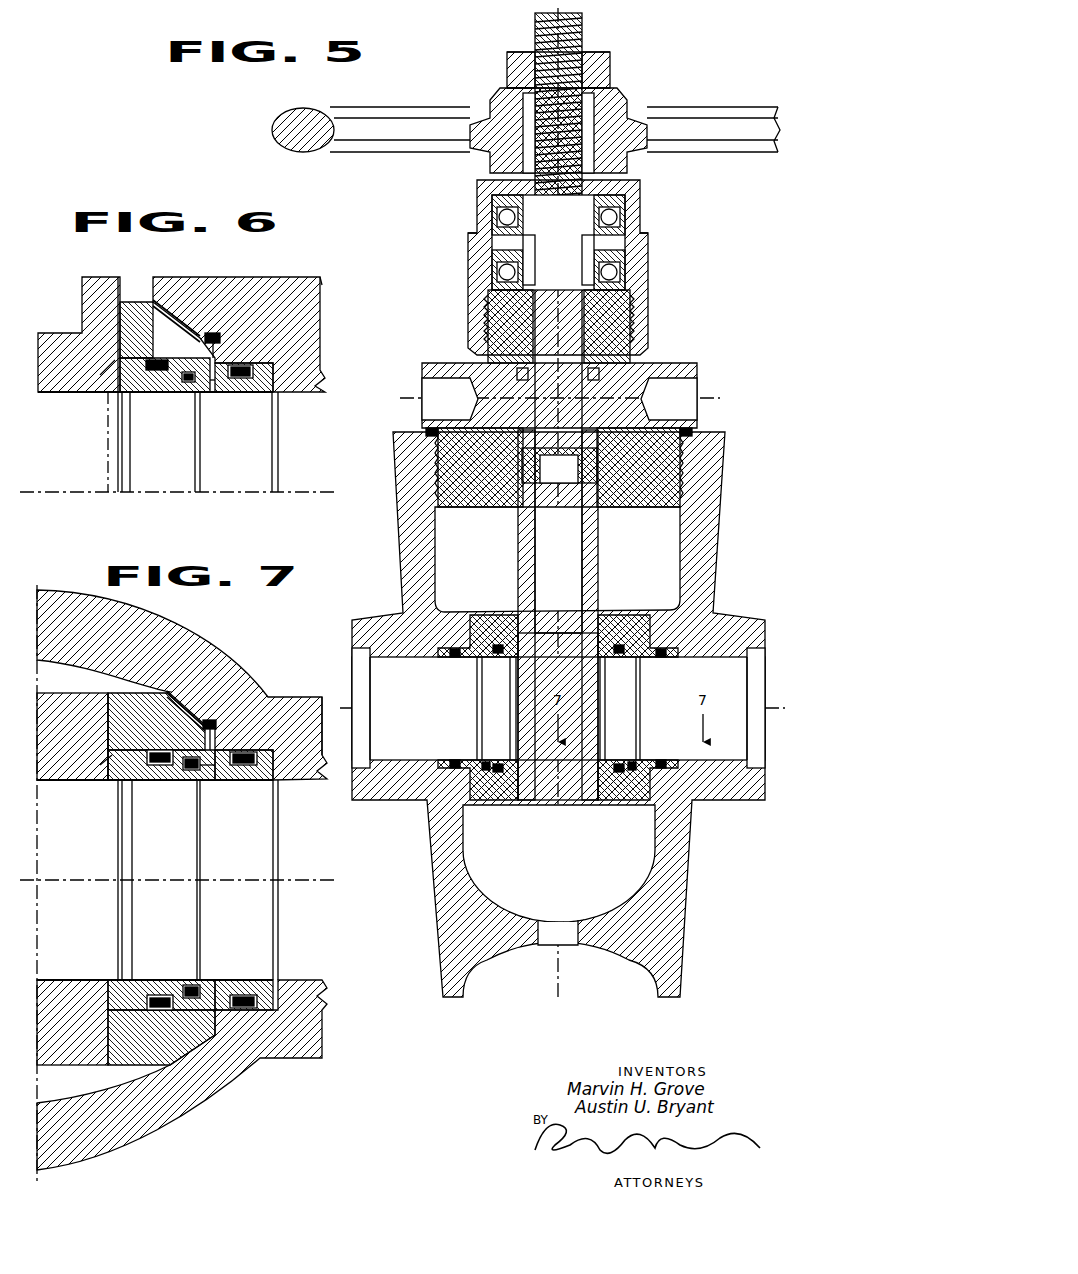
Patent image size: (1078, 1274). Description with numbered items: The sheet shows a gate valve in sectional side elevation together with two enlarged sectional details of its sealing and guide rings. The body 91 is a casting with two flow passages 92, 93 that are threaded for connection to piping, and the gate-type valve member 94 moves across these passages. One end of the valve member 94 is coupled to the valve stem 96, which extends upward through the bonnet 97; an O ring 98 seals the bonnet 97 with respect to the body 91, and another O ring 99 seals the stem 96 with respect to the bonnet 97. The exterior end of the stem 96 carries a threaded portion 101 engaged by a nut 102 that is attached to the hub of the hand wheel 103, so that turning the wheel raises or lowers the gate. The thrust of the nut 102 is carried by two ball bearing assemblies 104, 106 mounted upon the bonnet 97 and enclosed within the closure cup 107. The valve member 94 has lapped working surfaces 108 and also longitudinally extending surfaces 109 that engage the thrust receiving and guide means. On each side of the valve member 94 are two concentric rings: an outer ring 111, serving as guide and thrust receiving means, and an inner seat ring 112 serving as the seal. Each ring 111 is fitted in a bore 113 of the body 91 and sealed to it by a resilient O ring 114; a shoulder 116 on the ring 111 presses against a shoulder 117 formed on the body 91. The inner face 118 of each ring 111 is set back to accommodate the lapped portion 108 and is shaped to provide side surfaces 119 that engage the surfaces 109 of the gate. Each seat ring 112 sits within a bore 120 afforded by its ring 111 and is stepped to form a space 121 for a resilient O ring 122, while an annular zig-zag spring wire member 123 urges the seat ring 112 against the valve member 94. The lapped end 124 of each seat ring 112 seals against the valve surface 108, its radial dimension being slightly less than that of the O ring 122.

In FIG. 5, the body 91 is at (710, 522).
In FIG. 6, the body 91 is at (313, 331).
In FIG. 7, the body 91 is at (203, 1107).
In FIG. 5, the passage 92 is at (388, 662).
In FIG. 5, the passage 93 is at (755, 685).
In FIG. 6, the passage 93 is at (310, 423).
In FIG. 7, the passage 93 is at (312, 961).
In FIG. 5, the valve member 94 is at (598, 574).
In FIG. 6, the valve member 94 is at (40, 372).
In FIG. 7, the valve member 94 is at (78, 985).
In FIG. 5, the valve stem 96 is at (568, 340).
In FIG. 5, the bonnet 97 is at (698, 411).
In FIG. 5, the O ring 98 is at (684, 433).
In FIG. 5, the O ring 99 is at (596, 394).
In FIG. 5, the threaded portion 101 is at (622, 97).
In FIG. 5, the nut 102 is at (636, 185).
In FIG. 5, the hand wheel 103 is at (426, 113).
In FIG. 5, the ball bearing assembly 104 is at (622, 212).
In FIG. 5, the ball bearing assembly 106 is at (622, 269).
In FIG. 5, the closure cup 107 is at (644, 243).
In FIG. 6, the valve working surface 108 is at (105, 395).
In FIG. 7, the valve working surface 108 is at (112, 782).
In FIG. 6, the longitudinally extending surface 109 is at (106, 297).
In FIG. 7, the longitudinally extending surface 109 is at (108, 716).
In FIG. 5, the ring 111 is at (606, 616).
In FIG. 6, the ring 111 is at (132, 300).
In FIG. 7, the ring 111 is at (160, 722).
In FIG. 5, the seat ring 112 is at (493, 659).
In FIG. 6, the seat ring 112 is at (140, 396).
In FIG. 7, the seat ring 112 is at (152, 786).
In FIG. 6, the bore 113 is at (265, 362).
In FIG. 7, the bore 113 is at (268, 750).
In FIG. 5, the O ring 114 is at (661, 658).
In FIG. 6, the O ring 114 is at (243, 380).
In FIG. 7, the O ring 114 is at (250, 782).
In FIG. 6, the shoulder 116 is at (208, 333).
In FIG. 7, the shoulder 116 is at (210, 720).
In FIG. 6, the shoulder 117 is at (219, 338).
In FIG. 7, the shoulder 117 is at (214, 738).
In FIG. 6, the inner face 118 is at (118, 328).
In FIG. 6, the side surface 119 is at (108, 450).
In FIG. 7, the side surface 119 is at (128, 690).
In FIG. 6, the bore 120 is at (148, 356).
In FIG. 7, the bore 120 is at (172, 695).
In FIG. 6, the space 121 is at (160, 372).
In FIG. 7, the space 121 is at (162, 766).
In FIG. 5, the O ring 122 is at (631, 762).
In FIG. 6, the O ring 122 is at (168, 382).
In FIG. 7, the O ring 122 is at (188, 772).
In FIG. 6, the annular spring wire member 123 is at (215, 392).
In FIG. 7, the annular spring wire member 123 is at (225, 785).
In FIG. 6, the end 124 is at (100, 378).
In FIG. 7, the end 124 is at (95, 770).